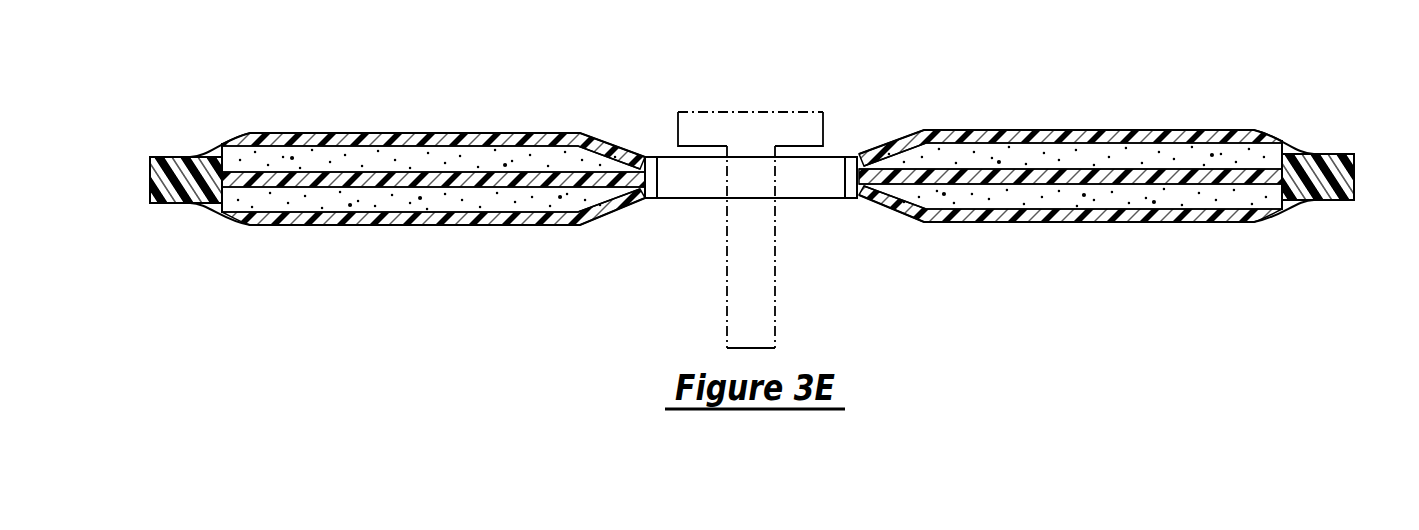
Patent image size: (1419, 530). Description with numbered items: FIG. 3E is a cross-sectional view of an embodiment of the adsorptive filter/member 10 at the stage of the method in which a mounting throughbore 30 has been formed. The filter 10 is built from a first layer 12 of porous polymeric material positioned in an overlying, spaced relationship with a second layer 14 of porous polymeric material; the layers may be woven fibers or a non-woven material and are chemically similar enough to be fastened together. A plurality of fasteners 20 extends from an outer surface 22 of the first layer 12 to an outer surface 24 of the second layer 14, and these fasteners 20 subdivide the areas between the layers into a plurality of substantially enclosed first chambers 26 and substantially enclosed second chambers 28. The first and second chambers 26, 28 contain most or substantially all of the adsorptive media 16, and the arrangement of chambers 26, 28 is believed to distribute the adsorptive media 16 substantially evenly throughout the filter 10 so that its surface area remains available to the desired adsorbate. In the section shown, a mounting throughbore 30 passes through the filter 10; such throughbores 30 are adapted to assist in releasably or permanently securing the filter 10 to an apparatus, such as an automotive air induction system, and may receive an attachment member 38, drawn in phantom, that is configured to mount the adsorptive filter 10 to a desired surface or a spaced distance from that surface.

The adsorptive filter/member 10 is at (1144, 80).
The first layer 12 is at (431, 144).
The second layer 14 is at (558, 221).
The adsorptive media 16 is at (363, 168).
The fasteners 20 is at (163, 156).
The outer surface of the first layer 22 is at (517, 132).
The outer surface of the second layer 24 is at (258, 228).
The first chambers 26 is at (257, 155).
The second chambers 28 is at (493, 204).
The mounting throughbores 30 is at (815, 200).
The attachment members 38 is at (748, 112).